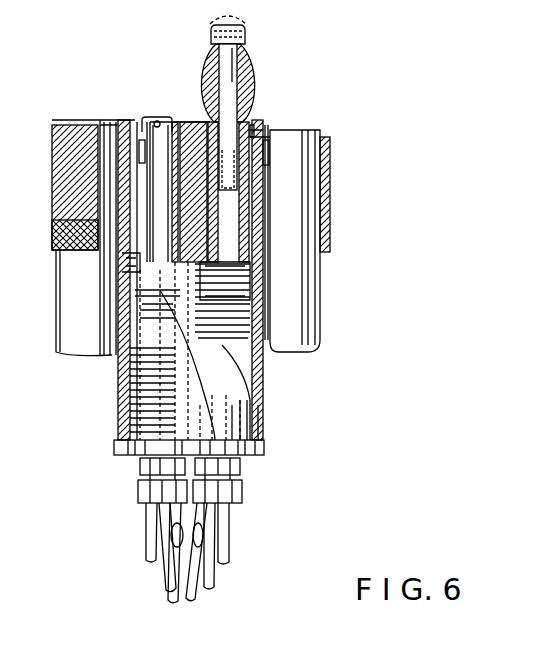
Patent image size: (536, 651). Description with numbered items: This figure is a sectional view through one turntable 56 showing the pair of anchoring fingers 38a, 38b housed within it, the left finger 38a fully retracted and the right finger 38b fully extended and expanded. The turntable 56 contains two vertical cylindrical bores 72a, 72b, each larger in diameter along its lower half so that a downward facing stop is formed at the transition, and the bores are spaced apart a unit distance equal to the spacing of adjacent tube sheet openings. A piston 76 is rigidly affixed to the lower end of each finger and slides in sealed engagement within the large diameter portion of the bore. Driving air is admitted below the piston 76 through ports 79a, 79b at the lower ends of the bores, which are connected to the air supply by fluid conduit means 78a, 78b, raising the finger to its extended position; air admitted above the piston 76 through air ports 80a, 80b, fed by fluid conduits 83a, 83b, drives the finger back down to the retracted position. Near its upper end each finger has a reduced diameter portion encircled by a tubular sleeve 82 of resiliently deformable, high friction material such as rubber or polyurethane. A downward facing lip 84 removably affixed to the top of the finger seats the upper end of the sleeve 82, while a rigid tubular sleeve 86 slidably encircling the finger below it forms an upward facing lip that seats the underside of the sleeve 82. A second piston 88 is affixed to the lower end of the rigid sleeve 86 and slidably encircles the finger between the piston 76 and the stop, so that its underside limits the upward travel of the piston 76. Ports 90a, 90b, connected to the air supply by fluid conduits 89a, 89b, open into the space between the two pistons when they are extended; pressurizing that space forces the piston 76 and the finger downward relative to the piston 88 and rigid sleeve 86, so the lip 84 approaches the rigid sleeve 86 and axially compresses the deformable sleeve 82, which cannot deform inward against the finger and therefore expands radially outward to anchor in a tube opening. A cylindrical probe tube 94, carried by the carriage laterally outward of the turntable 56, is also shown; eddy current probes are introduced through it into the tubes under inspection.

The finger 38a is at (137, 126).
The finger 38b is at (255, 82).
The turntable 56 is at (262, 126).
The cylindrical bore 72a is at (106, 352).
The cylindrical bore 72b is at (262, 373).
The piston 76 is at (246, 335).
The fluid conduit means 78a is at (150, 545).
The fluid conduit means 78b is at (222, 548).
The port 79a is at (118, 412).
The port 79b is at (230, 440).
The air port 80a is at (122, 268).
The air port 80b is at (156, 150).
The tubular sleeve 82 is at (201, 62).
The fluid conduit 83a is at (160, 520).
The fluid conduit 83b is at (222, 520).
The lip 84 is at (246, 38).
The rigid tubular sleeve 86 is at (250, 200).
The piston 88 is at (263, 275).
The fluid conduit 89a is at (165, 532).
The fluid conduit 89b is at (222, 532).
The port 90a is at (170, 298).
The port 90b is at (263, 300).
The cylindrical tube 94 is at (322, 130).